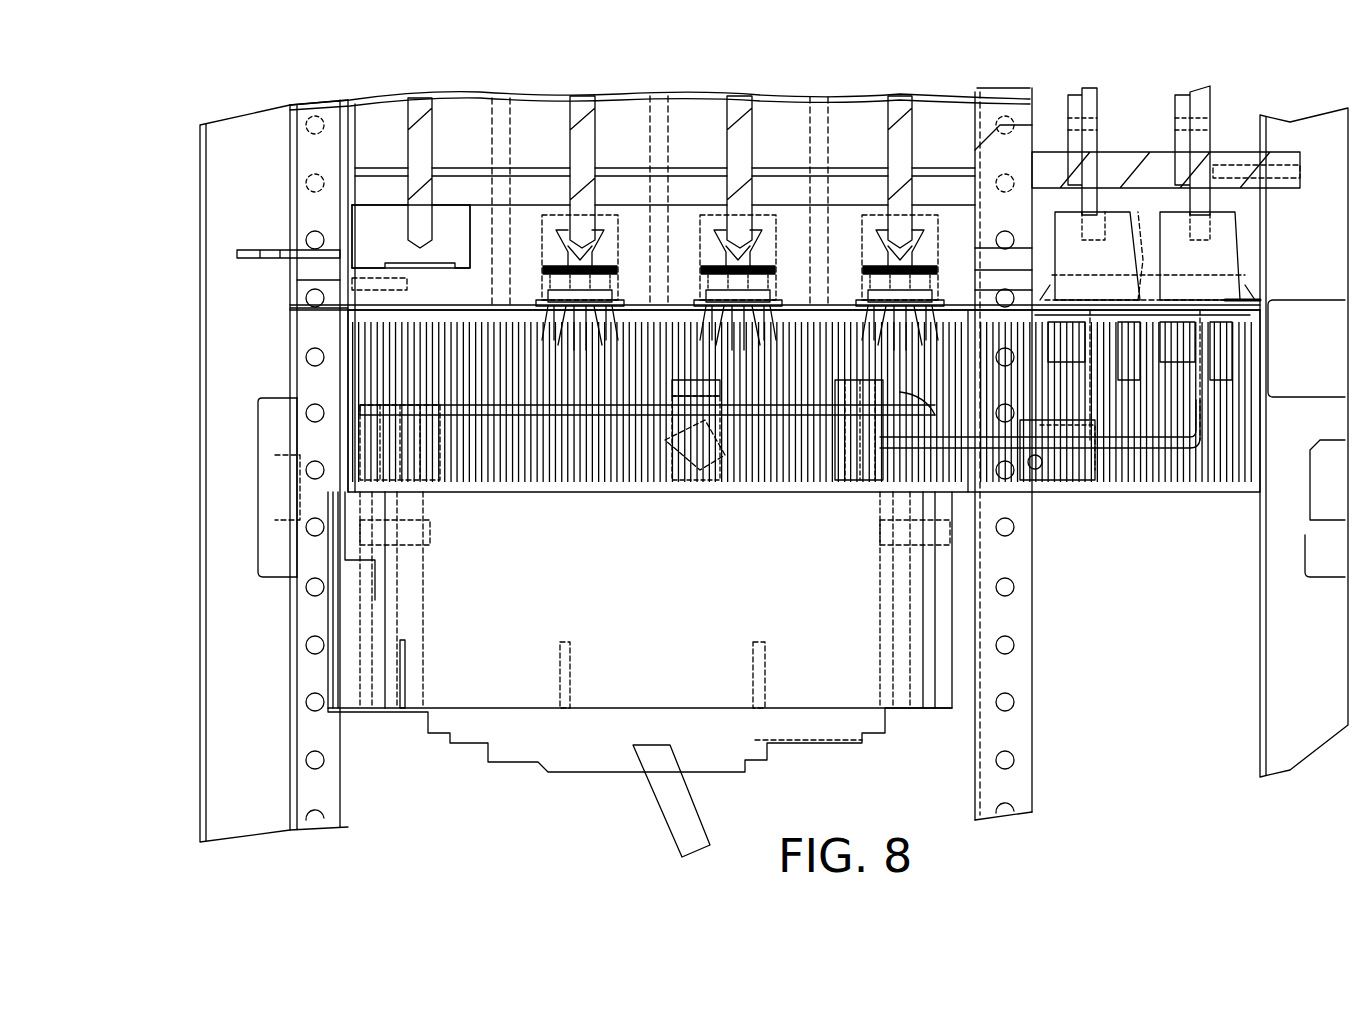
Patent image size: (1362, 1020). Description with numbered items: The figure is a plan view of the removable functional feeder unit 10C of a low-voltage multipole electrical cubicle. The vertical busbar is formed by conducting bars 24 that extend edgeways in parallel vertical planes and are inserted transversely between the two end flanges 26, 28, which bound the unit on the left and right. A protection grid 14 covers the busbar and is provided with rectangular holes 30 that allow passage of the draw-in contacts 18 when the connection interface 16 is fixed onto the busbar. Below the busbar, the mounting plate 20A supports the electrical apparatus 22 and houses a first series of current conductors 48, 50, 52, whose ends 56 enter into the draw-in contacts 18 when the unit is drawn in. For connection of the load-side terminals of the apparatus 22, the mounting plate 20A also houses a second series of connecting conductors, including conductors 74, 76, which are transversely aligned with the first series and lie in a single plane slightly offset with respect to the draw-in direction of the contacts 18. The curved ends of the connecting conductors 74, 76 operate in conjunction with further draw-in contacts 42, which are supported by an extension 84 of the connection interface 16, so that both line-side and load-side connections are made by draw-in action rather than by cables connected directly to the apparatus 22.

The functional feeder unit 10C is at (1140, 596).
The protection grid 14 is at (545, 268).
The connection interface 16 is at (400, 305).
The draw-in contacts 18 is at (578, 215).
The mounting plate 20A is at (1112, 478).
The electrical apparatus 22 is at (800, 718).
The conducting bars 24 is at (428, 135).
The end flange 26 is at (222, 375).
The end flange 28 is at (1020, 578).
The rectangular holes 30 is at (415, 268).
The draw-in contacts 42 is at (1175, 215).
The current conductor 48 is at (438, 420).
The current conductor 50 is at (645, 440).
The current conductor 52 is at (900, 420).
The conductor ends 56 is at (575, 405).
The connecting conductor 74 is at (965, 470).
The connecting conductor 76 is at (1180, 470).
The extension 84 is at (1148, 300).